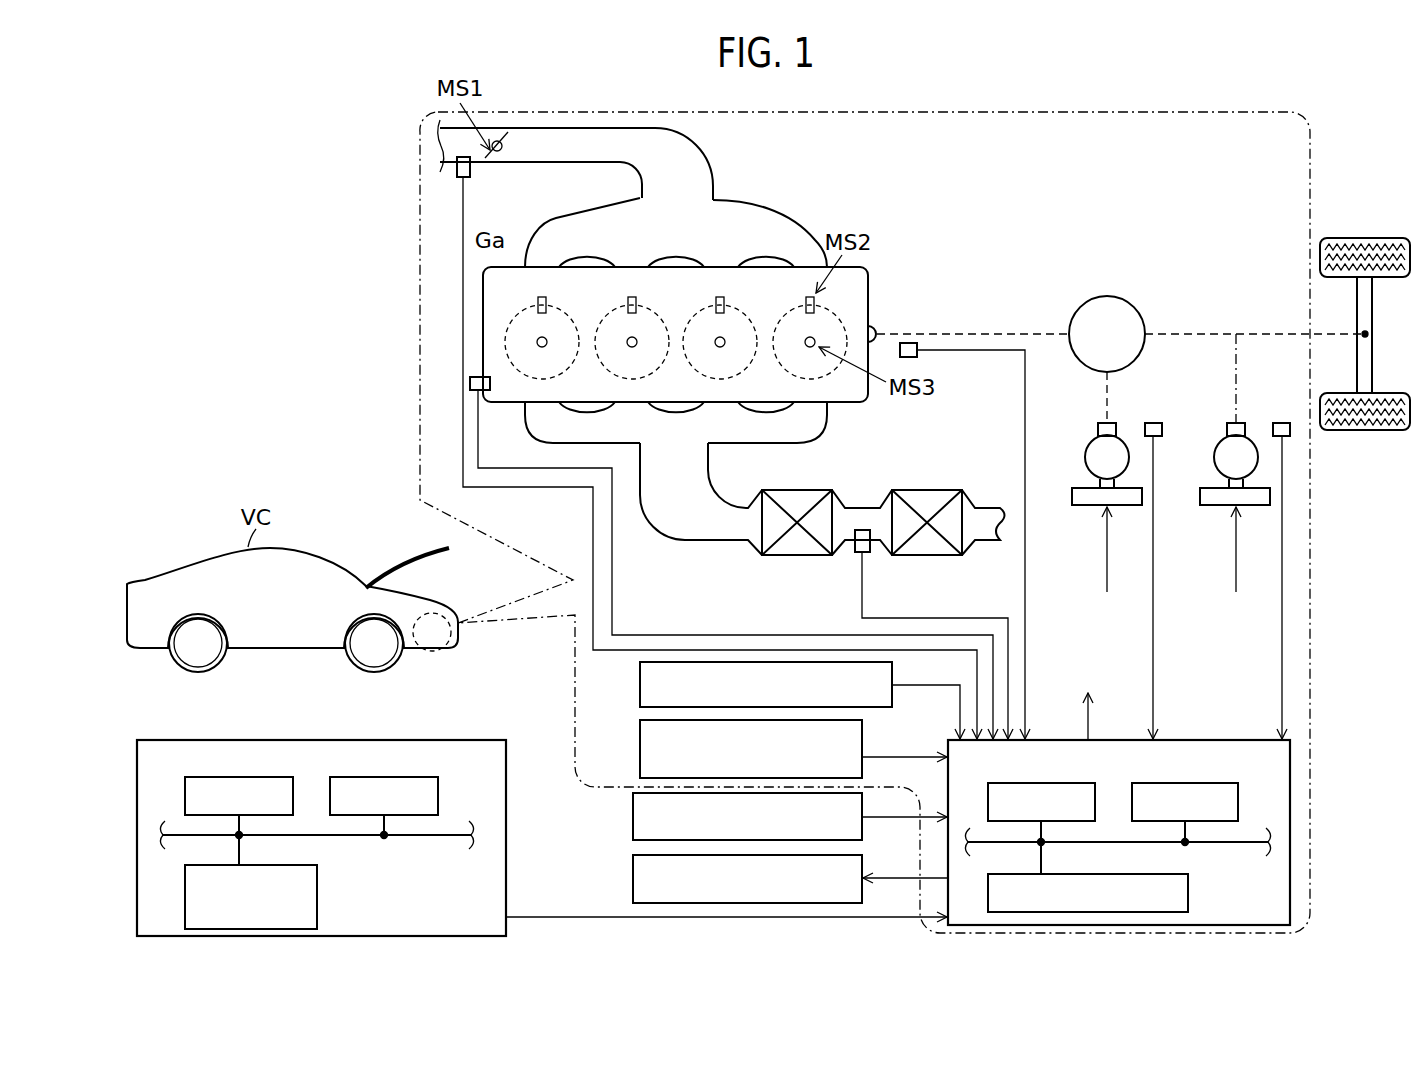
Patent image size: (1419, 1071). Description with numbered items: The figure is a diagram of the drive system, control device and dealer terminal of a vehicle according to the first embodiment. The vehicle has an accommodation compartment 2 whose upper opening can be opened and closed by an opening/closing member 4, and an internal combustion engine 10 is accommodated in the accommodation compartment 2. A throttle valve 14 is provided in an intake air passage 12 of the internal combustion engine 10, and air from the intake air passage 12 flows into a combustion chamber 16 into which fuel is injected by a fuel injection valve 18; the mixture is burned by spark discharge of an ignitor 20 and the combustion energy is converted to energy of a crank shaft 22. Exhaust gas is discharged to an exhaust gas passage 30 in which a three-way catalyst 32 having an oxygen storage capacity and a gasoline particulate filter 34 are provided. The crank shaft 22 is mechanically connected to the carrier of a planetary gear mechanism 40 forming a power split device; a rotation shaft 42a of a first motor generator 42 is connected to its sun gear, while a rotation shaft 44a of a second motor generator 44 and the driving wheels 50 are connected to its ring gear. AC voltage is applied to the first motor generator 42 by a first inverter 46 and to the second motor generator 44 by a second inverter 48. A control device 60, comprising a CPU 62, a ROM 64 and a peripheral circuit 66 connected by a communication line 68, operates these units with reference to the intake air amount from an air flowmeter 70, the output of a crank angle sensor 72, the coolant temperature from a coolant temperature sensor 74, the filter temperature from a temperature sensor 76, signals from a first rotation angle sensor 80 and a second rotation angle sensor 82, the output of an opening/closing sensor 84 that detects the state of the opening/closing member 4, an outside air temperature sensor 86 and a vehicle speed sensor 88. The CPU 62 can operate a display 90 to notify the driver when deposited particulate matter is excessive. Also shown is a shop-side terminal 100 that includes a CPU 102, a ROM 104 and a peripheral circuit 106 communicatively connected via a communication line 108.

The accommodation compartment 2 is at (437, 641).
The opening/closing member 4 is at (394, 570).
The internal combustion engine 10 is at (838, 184).
The intake air passage 12 is at (563, 160).
The throttle valve 14 is at (505, 147).
The combustion chamber 16 is at (524, 328).
The fuel injection valve 18 is at (546, 298).
The ignitor 20 is at (548, 346).
The crank shaft 22 is at (876, 328).
The exhaust gas passage 30 is at (805, 430).
The three-way catalyst 32 is at (796, 490).
The gasoline particulate filter 34 is at (930, 490).
The planetary gear mechanism 40 is at (1108, 296).
The first motor generator 42 is at (1082, 440).
The rotation shaft 42a is at (1097, 429).
The second motor generator 44 is at (1211, 440).
The rotation shaft 44a is at (1226, 429).
The first inverter 46 is at (1070, 498).
The second inverter 48 is at (1198, 498).
The driving wheels 50 is at (1362, 431).
The control device 60 is at (1091, 792).
The CPU 62 is at (1060, 783).
The ROM 64 is at (1205, 783).
The peripheral circuit 66 is at (1060, 874).
The communication line 68 is at (1232, 845).
The air flowmeter 70 is at (470, 170).
The crank angle sensor 72 is at (917, 343).
The coolant temperature sensor 74 is at (470, 383).
The temperature sensor 76 is at (872, 556).
The first rotation angle sensor 80 is at (1153, 423).
The second rotation angle sensor 82 is at (1282, 423).
The opening/closing sensor 84 is at (640, 685).
The outside air temperature sensor 86 is at (640, 755).
The vehicle speed sensor 88 is at (633, 815).
The display 90 is at (633, 877).
The shop-side terminal 100 is at (542, 822).
The CPU 102 is at (262, 777).
The ROM 104 is at (407, 777).
The peripheral circuit 106 is at (262, 866).
The communication line 108 is at (432, 840).